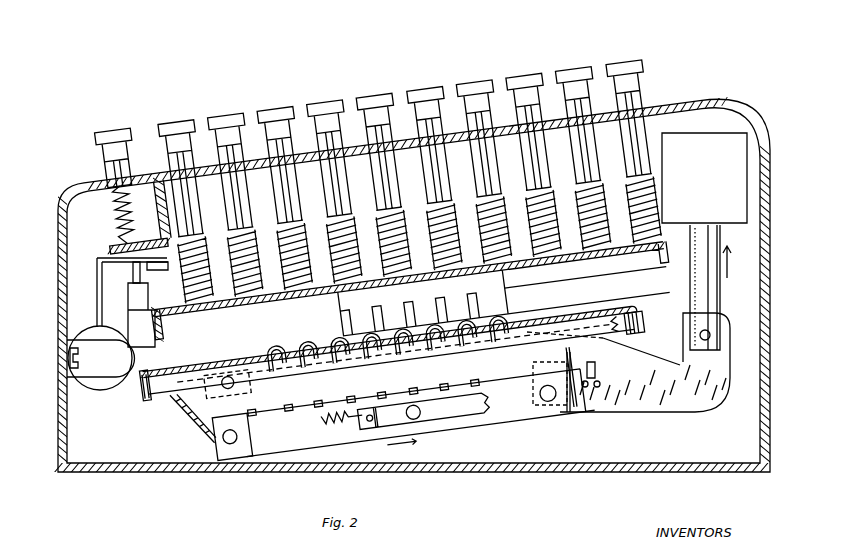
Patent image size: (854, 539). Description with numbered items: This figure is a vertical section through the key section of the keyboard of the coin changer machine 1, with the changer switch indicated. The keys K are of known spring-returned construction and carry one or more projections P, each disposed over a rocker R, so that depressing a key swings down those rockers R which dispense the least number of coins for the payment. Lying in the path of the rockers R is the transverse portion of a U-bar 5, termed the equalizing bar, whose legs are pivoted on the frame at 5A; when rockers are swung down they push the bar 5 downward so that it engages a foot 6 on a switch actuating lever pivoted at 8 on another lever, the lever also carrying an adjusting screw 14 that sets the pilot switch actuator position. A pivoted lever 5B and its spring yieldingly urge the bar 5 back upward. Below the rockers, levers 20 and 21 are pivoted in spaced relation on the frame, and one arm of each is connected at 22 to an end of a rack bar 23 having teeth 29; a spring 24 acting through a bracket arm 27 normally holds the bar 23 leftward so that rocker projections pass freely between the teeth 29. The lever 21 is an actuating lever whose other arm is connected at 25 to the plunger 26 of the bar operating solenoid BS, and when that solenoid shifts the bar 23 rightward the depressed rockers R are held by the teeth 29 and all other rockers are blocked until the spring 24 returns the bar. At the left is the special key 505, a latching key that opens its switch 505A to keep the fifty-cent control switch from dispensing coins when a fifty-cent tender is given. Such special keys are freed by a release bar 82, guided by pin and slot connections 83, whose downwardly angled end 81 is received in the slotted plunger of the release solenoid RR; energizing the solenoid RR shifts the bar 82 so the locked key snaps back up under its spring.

The casing 1 is at (57, 319).
The special key 505 is at (112, 148).
The keys K is at (238, 119).
The release bar 82 is at (111, 252).
The downwardly angled end of release bar 81 is at (97, 279).
The pin and slot connections 83 is at (144, 263).
The special switch 505A is at (144, 312).
The solenoid RR is at (124, 362).
The projections P is at (263, 338).
The rockers R is at (338, 346).
The U-bar 5 is at (497, 357).
The pivot mounting of U-bar legs 5A is at (141, 393).
The pivoted lever 5B is at (180, 399).
The lever 20 is at (200, 412).
The pivotal connection 22 is at (226, 438).
The rack bar 23 is at (512, 407).
The teeth of rack bar 29 is at (356, 399).
The bracket arm 27 is at (441, 416).
The spring 24 is at (345, 414).
The pivot of switch actuating lever 8 is at (546, 373).
The adjusting screw 14 is at (600, 387).
The foot 6 is at (626, 343).
The actuating lever 21 is at (705, 396).
The plunger 26 is at (698, 288).
The pivotal connection 25 is at (710, 332).
The bar operating solenoid BS is at (711, 171).